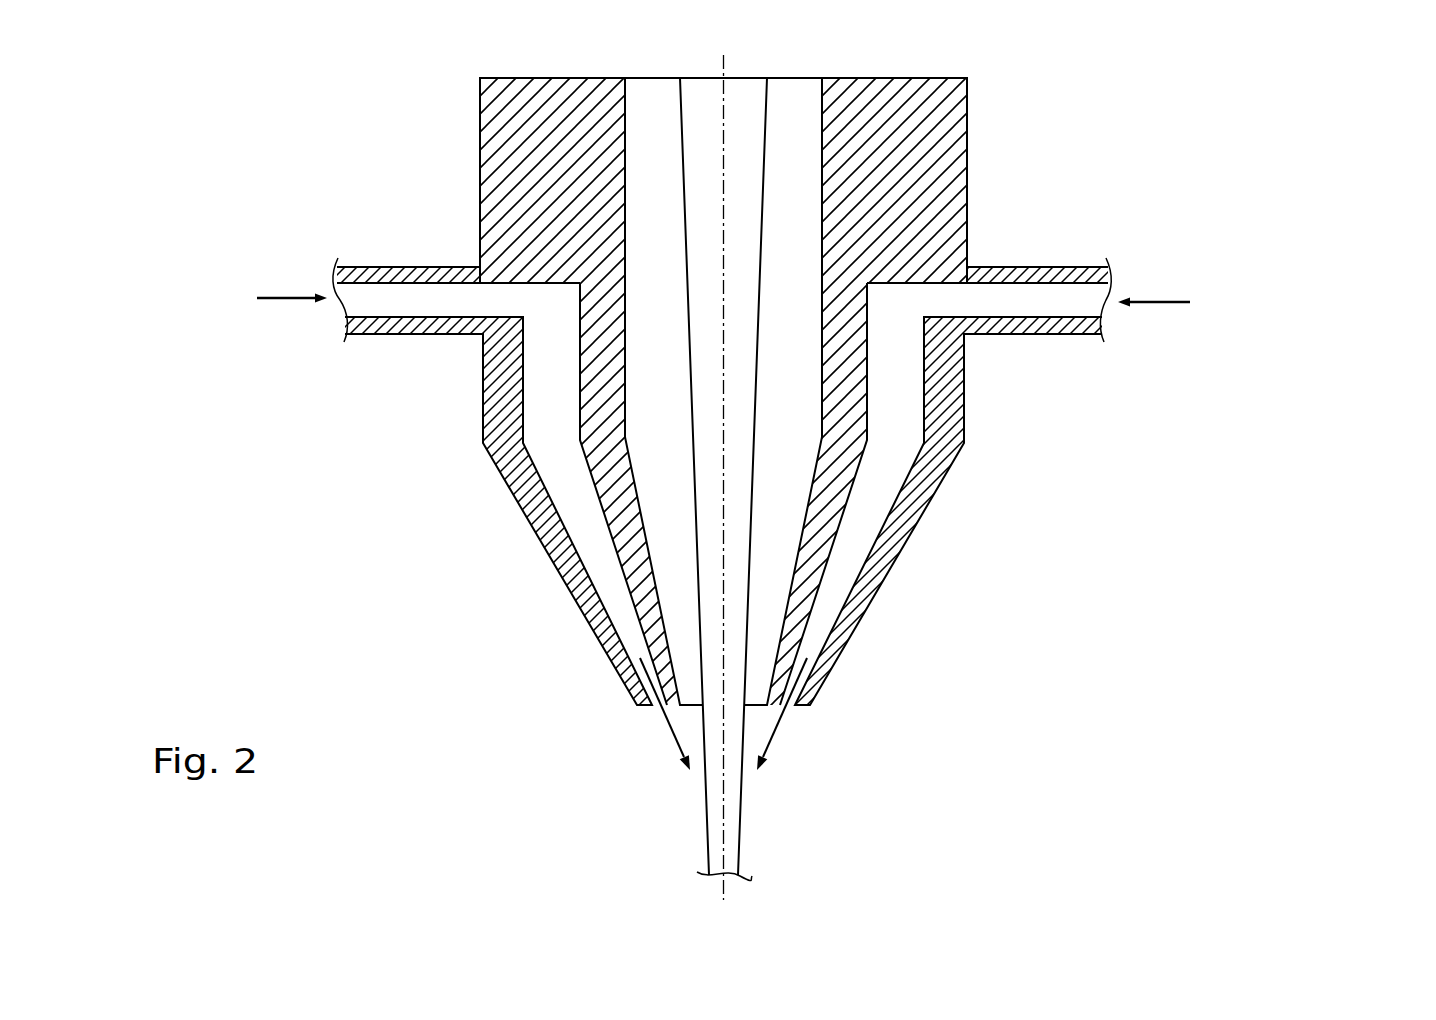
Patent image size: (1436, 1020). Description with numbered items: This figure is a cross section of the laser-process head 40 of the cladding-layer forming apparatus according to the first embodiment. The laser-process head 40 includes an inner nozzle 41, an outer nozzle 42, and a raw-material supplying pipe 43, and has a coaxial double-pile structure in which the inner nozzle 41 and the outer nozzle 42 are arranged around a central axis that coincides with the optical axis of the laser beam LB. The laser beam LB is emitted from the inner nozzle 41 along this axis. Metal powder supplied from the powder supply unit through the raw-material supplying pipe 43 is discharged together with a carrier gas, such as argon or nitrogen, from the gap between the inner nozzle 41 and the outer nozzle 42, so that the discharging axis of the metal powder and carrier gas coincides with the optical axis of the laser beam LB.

The laser-process head 40 is at (1045, 193).
The inner nozzle 41 is at (580, 383).
The outer nozzle 42 is at (502, 474).
The raw-material supplying pipe 43 is at (384, 272).
The laser beam LB is at (745, 825).